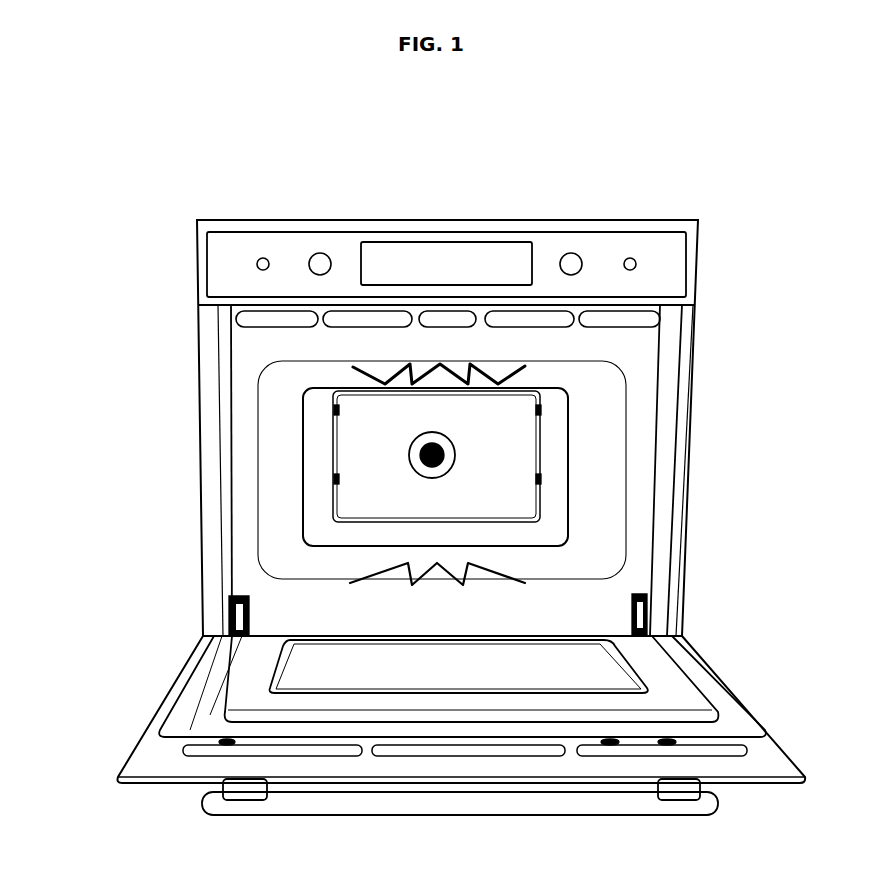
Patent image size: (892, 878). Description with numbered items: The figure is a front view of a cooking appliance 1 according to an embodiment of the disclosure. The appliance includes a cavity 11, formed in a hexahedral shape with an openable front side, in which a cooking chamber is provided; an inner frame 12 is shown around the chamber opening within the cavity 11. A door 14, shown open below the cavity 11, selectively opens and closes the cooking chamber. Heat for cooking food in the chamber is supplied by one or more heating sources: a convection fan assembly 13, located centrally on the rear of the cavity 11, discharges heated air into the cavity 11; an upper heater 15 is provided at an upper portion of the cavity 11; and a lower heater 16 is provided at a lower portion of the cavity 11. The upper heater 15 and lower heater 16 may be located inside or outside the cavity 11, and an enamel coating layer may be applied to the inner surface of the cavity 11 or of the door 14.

The cooking apparatus 1 is at (143, 195).
The cavity 11 is at (258, 384).
The chamber inner frame 12 is at (300, 372).
The convection fan assembly 13 is at (384, 455).
The door 14 is at (161, 708).
The upper heater 15 is at (560, 370).
The lower heater 16 is at (530, 578).